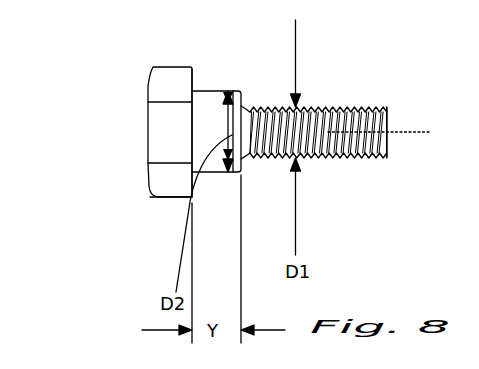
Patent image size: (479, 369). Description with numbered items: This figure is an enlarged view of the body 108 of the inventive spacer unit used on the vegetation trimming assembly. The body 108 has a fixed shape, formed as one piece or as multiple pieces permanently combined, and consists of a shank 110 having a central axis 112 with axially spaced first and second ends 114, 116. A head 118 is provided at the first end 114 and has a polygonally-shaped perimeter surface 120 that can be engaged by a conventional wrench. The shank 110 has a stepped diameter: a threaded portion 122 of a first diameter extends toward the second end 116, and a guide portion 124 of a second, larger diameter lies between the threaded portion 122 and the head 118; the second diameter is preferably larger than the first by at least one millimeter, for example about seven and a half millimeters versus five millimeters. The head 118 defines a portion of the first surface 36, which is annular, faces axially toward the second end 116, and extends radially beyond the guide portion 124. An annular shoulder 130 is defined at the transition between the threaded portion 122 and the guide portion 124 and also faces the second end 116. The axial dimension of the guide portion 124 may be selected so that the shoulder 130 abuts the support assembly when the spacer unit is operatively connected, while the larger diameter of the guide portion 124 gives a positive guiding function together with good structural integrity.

The first surface 36 is at (193, 82).
The body 108 is at (172, 178).
The shank 110 is at (305, 110).
The axis 112 is at (424, 134).
The first end 114 is at (190, 130).
The second end 116 is at (388, 135).
The head 118 is at (167, 120).
The polygonally-shaped perimeter surface 120 is at (163, 87).
The threaded portion 122 is at (332, 161).
The guide portion 124 is at (216, 172).
The annular shoulder 130 is at (238, 152).